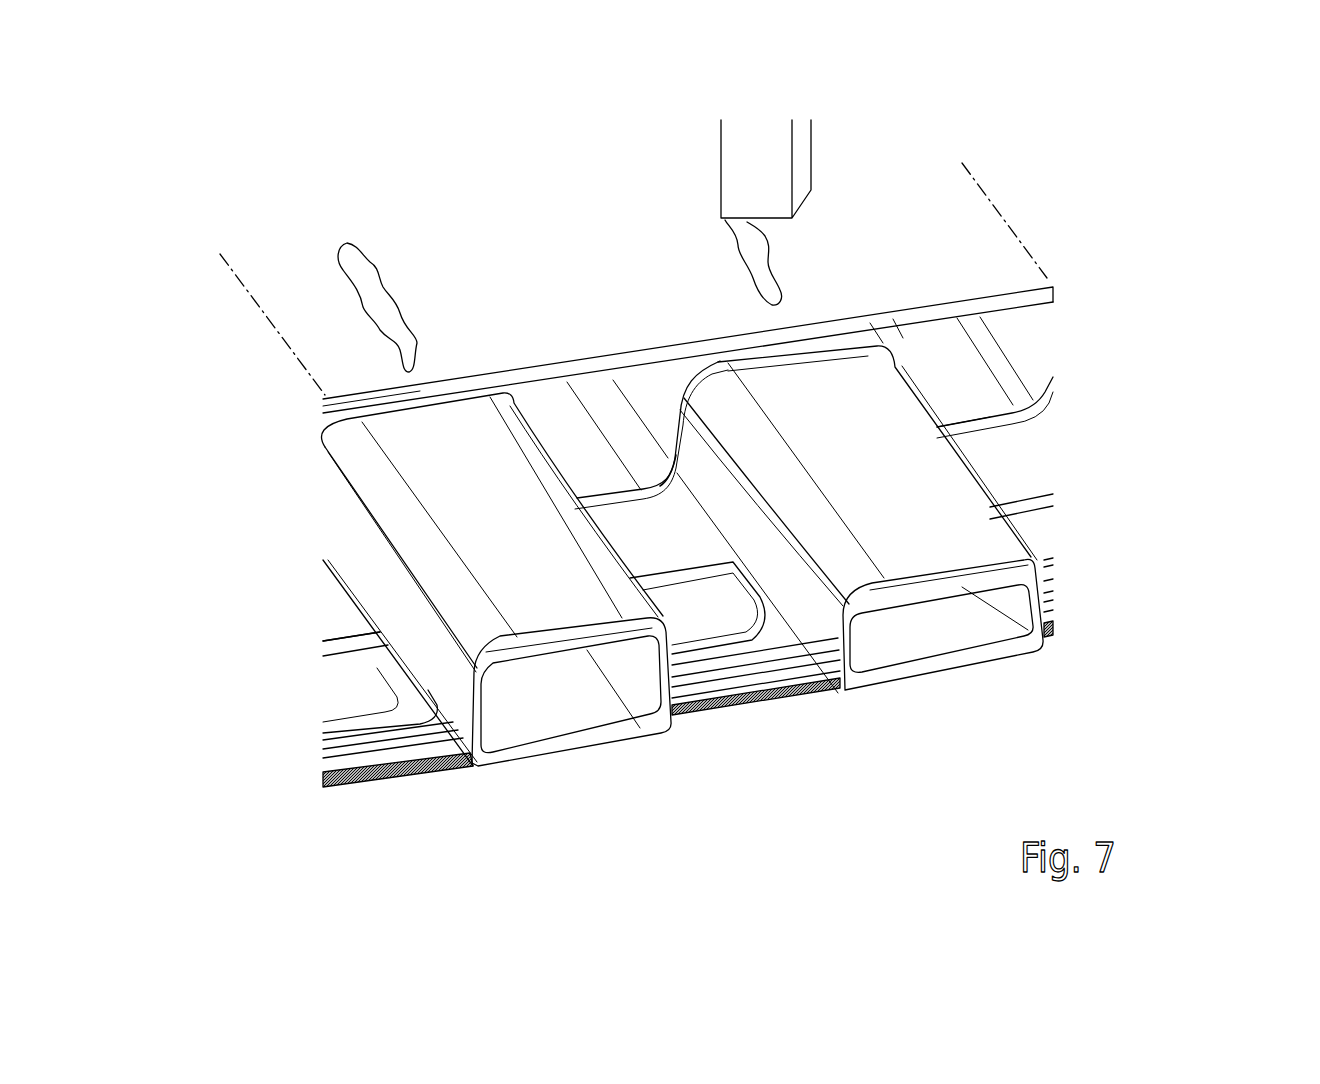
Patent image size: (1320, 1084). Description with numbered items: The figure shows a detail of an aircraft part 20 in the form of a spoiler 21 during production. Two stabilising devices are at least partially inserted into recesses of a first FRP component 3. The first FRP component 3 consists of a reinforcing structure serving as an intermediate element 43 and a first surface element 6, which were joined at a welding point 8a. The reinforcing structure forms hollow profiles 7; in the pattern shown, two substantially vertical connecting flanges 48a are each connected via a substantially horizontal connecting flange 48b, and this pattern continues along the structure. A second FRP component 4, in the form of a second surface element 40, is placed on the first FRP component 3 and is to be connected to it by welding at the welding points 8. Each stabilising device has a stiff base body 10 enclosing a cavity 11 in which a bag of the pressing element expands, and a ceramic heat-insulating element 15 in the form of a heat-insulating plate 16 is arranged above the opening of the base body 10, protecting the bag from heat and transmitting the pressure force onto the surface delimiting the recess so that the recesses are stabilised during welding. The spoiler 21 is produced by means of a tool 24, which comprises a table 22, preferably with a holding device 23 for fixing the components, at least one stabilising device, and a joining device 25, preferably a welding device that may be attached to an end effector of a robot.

The first FRP component 3 is at (930, 370).
The second FRP component 4 is at (995, 265).
The first surface element 6 is at (988, 457).
The hollow profile 7 is at (710, 375).
The welding point 8 is at (350, 257).
The welding point 8a is at (557, 437).
The base body 10 is at (740, 610).
The cavity 11 is at (587, 715).
The heat-insulating element 15 is at (532, 618).
The heat-insulating plate 16 is at (600, 604).
The aircraft part 20 is at (873, 283).
The spoiler 21 is at (1005, 280).
The table 22 is at (770, 703).
The holding device 23 is at (410, 748).
The tool 24 is at (277, 777).
The joining device 25 is at (747, 190).
The second surface element 40 is at (315, 308).
The intermediate element 43 is at (535, 412).
The connecting flange 48a is at (677, 430).
The connecting flange 48b is at (757, 357).